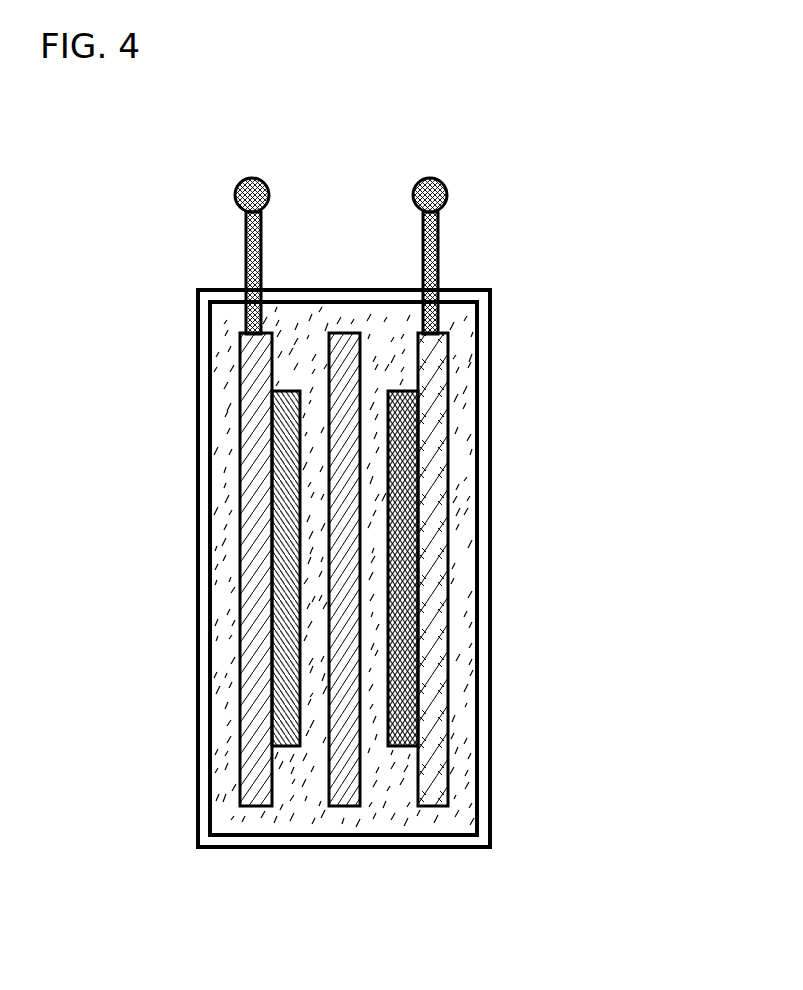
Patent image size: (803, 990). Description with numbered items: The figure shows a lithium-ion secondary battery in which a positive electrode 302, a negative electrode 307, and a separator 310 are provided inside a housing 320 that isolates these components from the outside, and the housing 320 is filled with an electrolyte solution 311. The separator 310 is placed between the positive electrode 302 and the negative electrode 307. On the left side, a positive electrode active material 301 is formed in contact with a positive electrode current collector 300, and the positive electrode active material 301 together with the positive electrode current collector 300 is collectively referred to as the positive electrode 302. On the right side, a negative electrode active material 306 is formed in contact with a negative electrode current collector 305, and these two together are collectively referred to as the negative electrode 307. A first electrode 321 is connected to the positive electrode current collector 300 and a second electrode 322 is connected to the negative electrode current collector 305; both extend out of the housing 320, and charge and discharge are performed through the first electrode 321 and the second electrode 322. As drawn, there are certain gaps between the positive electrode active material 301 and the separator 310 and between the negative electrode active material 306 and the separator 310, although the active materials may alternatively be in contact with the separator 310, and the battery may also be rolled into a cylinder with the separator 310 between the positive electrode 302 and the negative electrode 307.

The positive electrode current collector 300 is at (262, 780).
The positive electrode active material 301 is at (292, 748).
The positive electrode 302 is at (264, 656).
The negative electrode current collector 305 is at (442, 807).
The negative electrode active material 306 is at (403, 748).
The negative electrode 307 is at (448, 656).
The separator 310 is at (341, 334).
The electrolyte solution 311 is at (472, 320).
The housing 320 is at (484, 373).
The first electrode 321 is at (270, 190).
The second electrode 322 is at (448, 190).